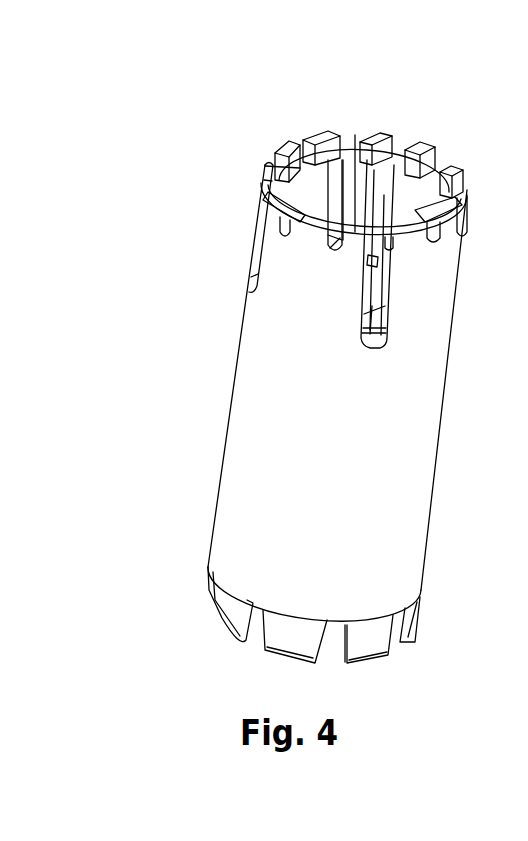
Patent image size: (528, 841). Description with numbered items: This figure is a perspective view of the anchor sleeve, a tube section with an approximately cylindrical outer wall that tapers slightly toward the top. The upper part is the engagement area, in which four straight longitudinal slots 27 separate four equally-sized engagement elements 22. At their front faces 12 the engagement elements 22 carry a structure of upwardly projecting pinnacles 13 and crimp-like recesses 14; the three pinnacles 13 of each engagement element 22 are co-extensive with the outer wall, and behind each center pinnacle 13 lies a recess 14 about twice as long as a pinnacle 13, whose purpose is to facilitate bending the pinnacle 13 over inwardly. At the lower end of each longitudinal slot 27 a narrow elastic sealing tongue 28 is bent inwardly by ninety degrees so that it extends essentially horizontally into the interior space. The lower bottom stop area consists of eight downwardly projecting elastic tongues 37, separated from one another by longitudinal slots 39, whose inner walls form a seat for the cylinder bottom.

The front face 12 is at (298, 191).
The pinnacle 13 is at (280, 147).
The recess 14 is at (275, 174).
The engagement element 22 is at (304, 263).
The longitudinal slot 27 is at (383, 282).
The sealing tongue 28 is at (362, 328).
The elastic tongue 37 is at (228, 607).
The longitudinal slot 39 is at (257, 628).